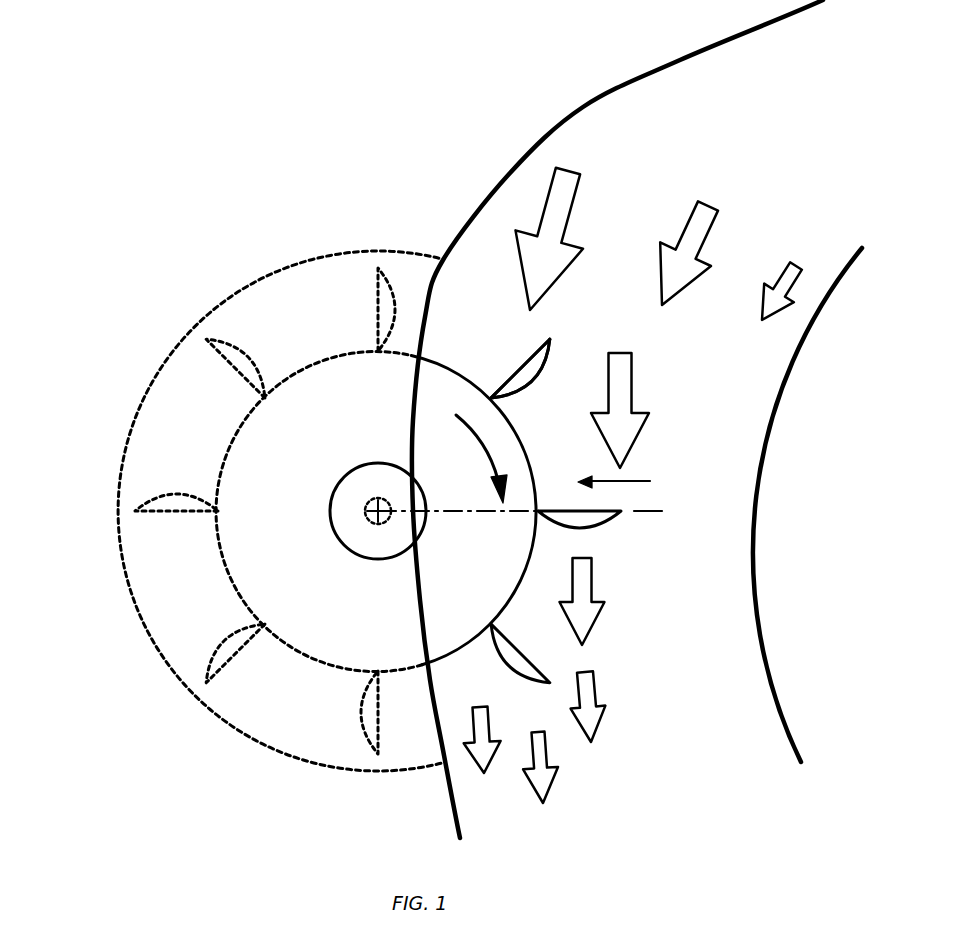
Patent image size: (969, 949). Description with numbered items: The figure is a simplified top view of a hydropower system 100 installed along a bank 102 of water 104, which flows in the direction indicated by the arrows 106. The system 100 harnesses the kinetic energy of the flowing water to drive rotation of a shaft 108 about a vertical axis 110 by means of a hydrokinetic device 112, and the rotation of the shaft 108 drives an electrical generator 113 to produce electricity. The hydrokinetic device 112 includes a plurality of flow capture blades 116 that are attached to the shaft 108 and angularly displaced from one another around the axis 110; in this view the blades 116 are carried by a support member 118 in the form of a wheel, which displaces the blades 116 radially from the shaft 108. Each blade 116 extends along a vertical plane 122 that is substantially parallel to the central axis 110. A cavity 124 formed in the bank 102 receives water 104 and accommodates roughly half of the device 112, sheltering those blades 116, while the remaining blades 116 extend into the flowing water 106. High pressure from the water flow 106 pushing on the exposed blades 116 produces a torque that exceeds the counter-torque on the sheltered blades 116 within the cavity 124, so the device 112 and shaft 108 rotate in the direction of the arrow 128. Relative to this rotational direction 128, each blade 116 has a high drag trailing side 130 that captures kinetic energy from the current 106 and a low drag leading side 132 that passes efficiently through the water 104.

The hydropower system 100 is at (123, 144).
The bank 102 is at (418, 184).
The water 104 is at (732, 452).
The water flow 106 is at (568, 180).
The shaft 108 is at (368, 505).
The vertical axis 110 is at (375, 515).
The hydrokinetic device 112 is at (536, 490).
The electrical generator 113 is at (374, 553).
The flow capture blades 116 is at (385, 268).
The support members 118 is at (245, 450).
The vertical plane 122 is at (632, 513).
The cavity 124 is at (293, 278).
The rotational direction 128 is at (490, 458).
The high drag trailing side 130 is at (533, 352).
The low drag leading side 132 is at (535, 380).